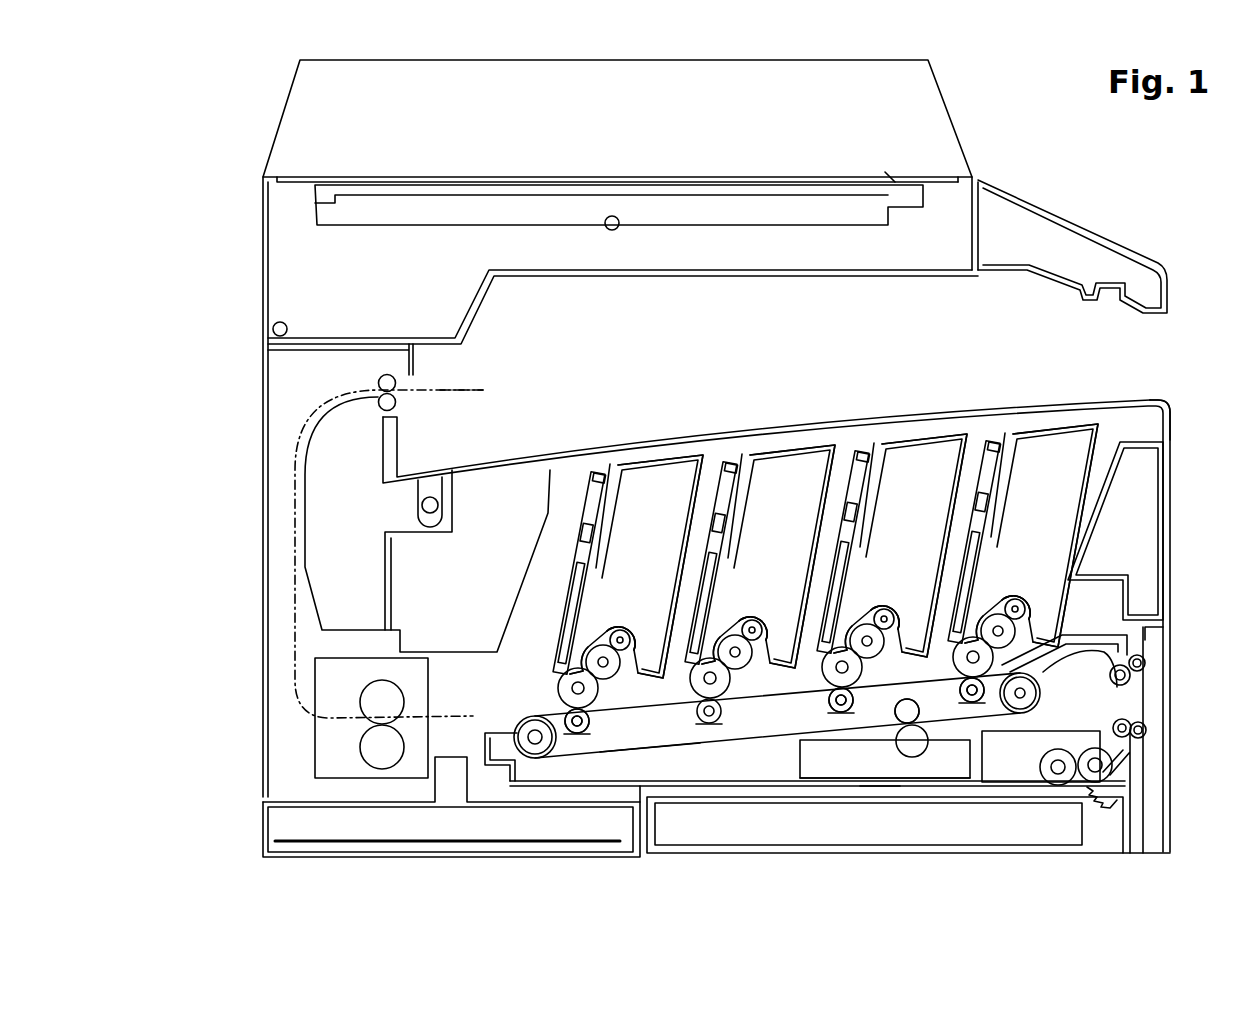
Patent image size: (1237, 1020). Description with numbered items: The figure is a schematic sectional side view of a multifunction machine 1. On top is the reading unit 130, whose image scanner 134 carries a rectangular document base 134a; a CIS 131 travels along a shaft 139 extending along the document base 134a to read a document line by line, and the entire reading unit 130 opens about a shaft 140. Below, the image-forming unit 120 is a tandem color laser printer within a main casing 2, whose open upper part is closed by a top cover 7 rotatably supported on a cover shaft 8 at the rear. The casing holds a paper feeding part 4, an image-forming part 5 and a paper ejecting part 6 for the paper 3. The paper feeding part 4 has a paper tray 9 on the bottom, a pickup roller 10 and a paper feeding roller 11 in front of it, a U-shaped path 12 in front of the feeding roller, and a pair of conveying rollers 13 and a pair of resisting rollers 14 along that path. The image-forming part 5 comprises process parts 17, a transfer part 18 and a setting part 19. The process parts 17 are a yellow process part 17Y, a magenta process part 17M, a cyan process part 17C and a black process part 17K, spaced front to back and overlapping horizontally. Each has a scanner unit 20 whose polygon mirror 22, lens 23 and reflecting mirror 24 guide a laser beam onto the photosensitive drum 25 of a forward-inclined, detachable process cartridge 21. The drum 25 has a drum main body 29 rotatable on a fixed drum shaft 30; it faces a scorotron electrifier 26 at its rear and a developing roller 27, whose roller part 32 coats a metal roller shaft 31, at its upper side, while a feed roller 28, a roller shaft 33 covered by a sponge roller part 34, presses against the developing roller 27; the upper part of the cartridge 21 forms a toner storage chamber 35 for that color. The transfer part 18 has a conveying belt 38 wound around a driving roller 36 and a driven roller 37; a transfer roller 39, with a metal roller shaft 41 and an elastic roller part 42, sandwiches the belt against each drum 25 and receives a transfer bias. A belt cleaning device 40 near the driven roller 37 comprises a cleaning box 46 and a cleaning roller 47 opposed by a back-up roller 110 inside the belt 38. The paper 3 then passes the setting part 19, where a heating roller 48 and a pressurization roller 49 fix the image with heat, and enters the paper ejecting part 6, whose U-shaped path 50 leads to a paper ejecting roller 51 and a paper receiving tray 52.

The multifunction machine 1 is at (1160, 186).
The main casing 2 is at (1172, 475).
The paper 3 is at (472, 388).
The paper feeding part 4 is at (1158, 648).
The image-forming part 5 is at (571, 497).
The paper ejecting part 6 is at (322, 412).
The top cover 7 is at (1172, 427).
The cover shaft 8 is at (424, 507).
The paper tray 9 is at (1100, 854).
The pickup roller 10 is at (1051, 783).
The paper feeding roller 11 is at (1087, 781).
The U-shaped path 12 is at (1086, 644).
The pair of conveying rollers 13 is at (1147, 735).
The pair of resisting rollers 14 is at (1131, 676).
The process part 17 is at (834, 510).
The black process part 17K is at (636, 526).
The cyan process part 17C is at (768, 518).
The magenta process part 17M is at (900, 522).
The yellow process part 17Y is at (1031, 495).
The transfer part 18 is at (543, 788).
The setting part 19 is at (383, 782).
The scanner unit 20 is at (787, 472).
The process cartridge 21 is at (858, 531).
The polygon mirror 22 is at (750, 599).
The lens 23 is at (749, 515).
The reflecting mirror 24 is at (801, 432).
The photosensitive drum 25 is at (777, 725).
The scorotron electrifier 26 is at (747, 675).
The developing roller 27 is at (800, 613).
The feed roller 28 is at (828, 578).
The drum main body 29 is at (630, 736).
The drum shaft 30 is at (591, 722).
The roller shaft 31 is at (797, 626).
The roller part 32 is at (792, 623).
The roller shaft 33 is at (821, 587).
The roller part 34 is at (830, 591).
The toner storage chamber 35 is at (847, 529).
The driving roller 36 is at (534, 745).
The driven roller 37 is at (1028, 712).
The conveying belt 38 is at (664, 748).
The transfer roller 39 is at (553, 886).
The belt cleaning device 40 is at (877, 789).
The roller shaft 41 is at (583, 748).
The roller part 42 is at (573, 748).
The cleaning box 46 is at (857, 780).
The cleaning roller 47 is at (914, 738).
The heating roller 48 is at (361, 703).
The pressurization roller 49 is at (361, 749).
The U-shaped path 50 is at (307, 472).
The paper ejecting roller 51 is at (398, 399).
The paper receiving tray 52 is at (545, 457).
The back-up roller 110 is at (905, 752).
The image-forming unit 120 is at (1172, 385).
The reading unit 130 is at (248, 184).
The CIS 131 is at (378, 217).
The image scanner 134 is at (810, 172).
The document base 134a is at (884, 170).
The shaft 139 is at (612, 232).
The shaft 140 is at (272, 327).